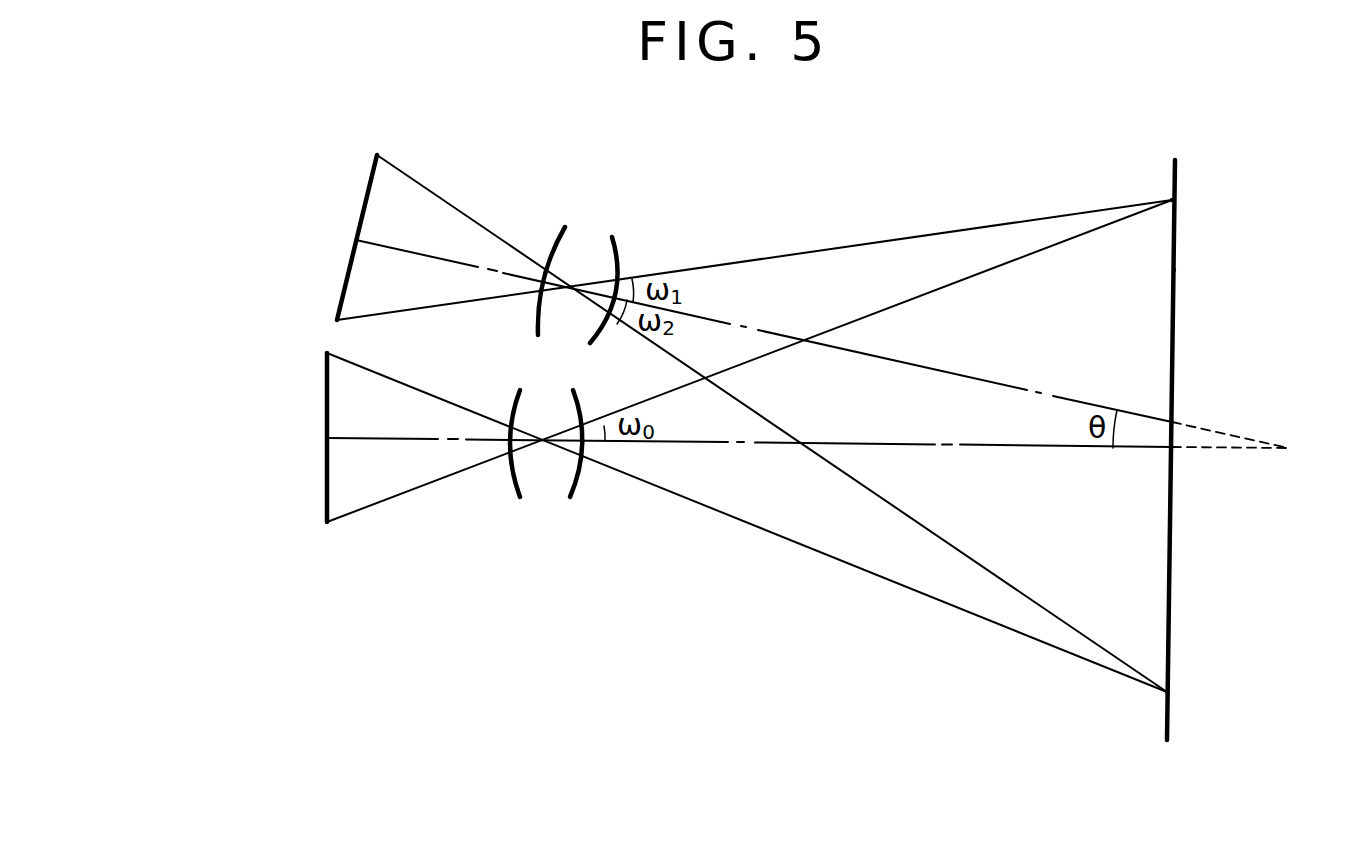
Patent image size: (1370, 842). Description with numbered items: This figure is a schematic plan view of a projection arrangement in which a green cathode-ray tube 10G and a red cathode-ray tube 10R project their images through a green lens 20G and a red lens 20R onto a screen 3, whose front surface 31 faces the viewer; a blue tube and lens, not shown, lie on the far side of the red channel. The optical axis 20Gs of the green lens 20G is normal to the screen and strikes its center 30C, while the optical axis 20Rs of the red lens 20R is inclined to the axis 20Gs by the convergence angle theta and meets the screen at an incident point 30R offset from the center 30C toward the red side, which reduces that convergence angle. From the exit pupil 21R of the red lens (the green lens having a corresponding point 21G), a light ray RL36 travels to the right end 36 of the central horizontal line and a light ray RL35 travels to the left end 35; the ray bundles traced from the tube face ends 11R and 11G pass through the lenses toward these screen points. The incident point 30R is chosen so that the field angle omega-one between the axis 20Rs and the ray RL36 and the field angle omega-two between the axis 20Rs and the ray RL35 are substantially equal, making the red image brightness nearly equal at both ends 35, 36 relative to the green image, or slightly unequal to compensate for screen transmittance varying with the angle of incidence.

The screen 3 is at (1176, 162).
The right end of central horizontal line 36 is at (1178, 198).
The front surface of screen 31 is at (1178, 270).
The incident point 30R is at (1176, 418).
The center of screen 30C is at (1176, 450).
The left end of central horizontal line 35 is at (1170, 694).
The red cathode-ray tube 10R is at (364, 185).
The upper end of red display panel 11R is at (377, 153).
The green cathode-ray tube 10G is at (326, 398).
The lower end of green display panel 11G is at (325, 525).
The red lens 20R is at (555, 237).
The exit pupil 21R is at (578, 277).
The green lens 20G is at (572, 503).
The green projection lens element 21G is at (542, 447).
The light ray RL36 is at (905, 238).
The light ray RL35 is at (823, 463).
The optical axis of red lens 20Rs is at (1038, 390).
The optical axis of green lens 20Gs is at (1017, 453).